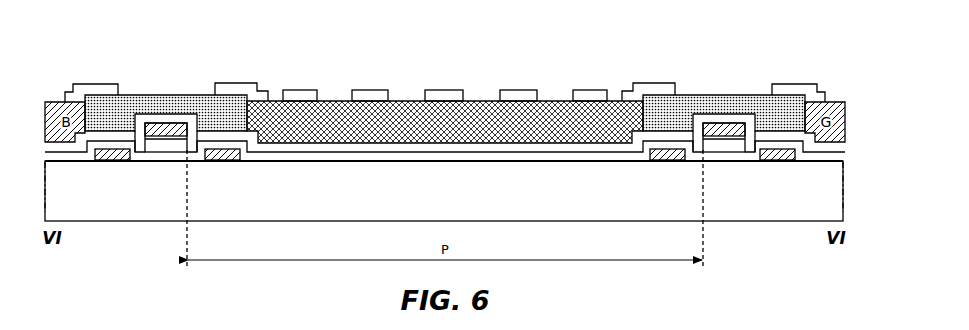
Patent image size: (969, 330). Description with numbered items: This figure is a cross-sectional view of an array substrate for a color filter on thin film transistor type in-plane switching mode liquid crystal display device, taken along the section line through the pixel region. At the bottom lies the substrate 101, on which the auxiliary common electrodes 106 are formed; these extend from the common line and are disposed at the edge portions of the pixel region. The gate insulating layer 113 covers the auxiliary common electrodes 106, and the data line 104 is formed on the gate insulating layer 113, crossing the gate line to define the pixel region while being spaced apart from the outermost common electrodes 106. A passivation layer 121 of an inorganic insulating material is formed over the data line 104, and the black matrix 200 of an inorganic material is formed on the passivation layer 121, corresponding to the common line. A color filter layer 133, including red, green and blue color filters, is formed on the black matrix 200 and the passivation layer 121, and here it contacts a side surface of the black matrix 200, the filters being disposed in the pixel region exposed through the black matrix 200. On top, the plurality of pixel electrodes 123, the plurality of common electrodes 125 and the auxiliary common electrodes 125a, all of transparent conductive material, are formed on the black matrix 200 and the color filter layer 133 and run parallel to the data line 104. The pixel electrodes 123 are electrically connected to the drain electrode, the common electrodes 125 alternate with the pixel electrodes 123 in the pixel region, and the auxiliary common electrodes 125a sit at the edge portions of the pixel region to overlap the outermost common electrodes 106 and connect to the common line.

The substrate 101 is at (806, 200).
The data line 104 is at (157, 140).
The auxiliary common electrodes 106 is at (108, 161).
The gate insulating layer 113 is at (335, 159).
The passivation layer 121 is at (386, 146).
The pixel electrodes 123 is at (295, 90).
The common electrodes 125 is at (368, 90).
The auxiliary common electrodes 125a is at (90, 88).
The color filter layer 133 is at (402, 112).
The black matrix 200 is at (153, 95).